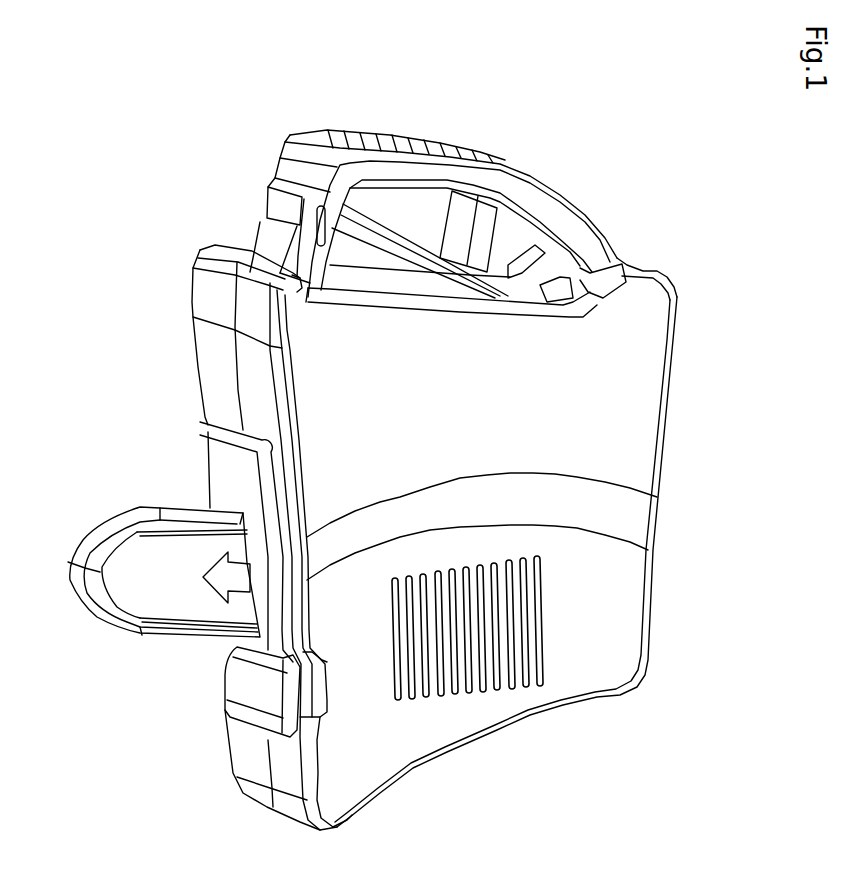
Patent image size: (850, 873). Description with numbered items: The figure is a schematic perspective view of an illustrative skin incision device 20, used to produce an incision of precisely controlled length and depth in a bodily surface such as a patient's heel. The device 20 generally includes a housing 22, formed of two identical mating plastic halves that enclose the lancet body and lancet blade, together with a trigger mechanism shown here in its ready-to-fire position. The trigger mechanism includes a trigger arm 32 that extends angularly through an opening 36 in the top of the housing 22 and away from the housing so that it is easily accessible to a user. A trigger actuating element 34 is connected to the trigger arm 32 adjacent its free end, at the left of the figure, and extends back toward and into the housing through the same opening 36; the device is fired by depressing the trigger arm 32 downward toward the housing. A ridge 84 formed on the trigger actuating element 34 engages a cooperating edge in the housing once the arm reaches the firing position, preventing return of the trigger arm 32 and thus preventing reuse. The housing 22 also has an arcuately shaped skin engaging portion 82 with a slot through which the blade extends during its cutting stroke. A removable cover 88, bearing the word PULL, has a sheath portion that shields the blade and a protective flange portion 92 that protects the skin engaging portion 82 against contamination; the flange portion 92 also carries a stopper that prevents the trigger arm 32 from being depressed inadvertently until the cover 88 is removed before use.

The incision device 20 is at (698, 196).
The housing 22 is at (492, 407).
The trigger arm 32 is at (547, 195).
The trigger actuating element 34 is at (265, 240).
The opening 36 is at (344, 283).
The skin engaging portion 82 is at (320, 672).
The ridge 84 is at (275, 206).
The removable cover 88 is at (162, 650).
The protective flange portion 92 is at (240, 686).